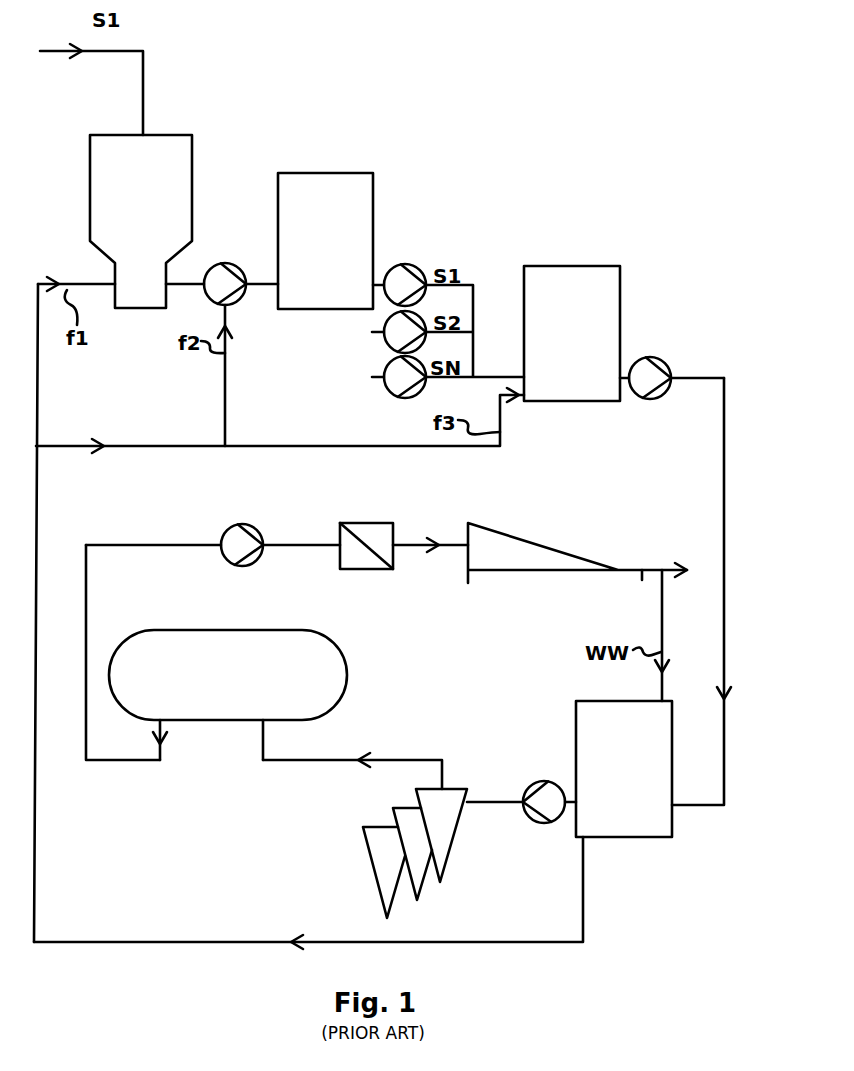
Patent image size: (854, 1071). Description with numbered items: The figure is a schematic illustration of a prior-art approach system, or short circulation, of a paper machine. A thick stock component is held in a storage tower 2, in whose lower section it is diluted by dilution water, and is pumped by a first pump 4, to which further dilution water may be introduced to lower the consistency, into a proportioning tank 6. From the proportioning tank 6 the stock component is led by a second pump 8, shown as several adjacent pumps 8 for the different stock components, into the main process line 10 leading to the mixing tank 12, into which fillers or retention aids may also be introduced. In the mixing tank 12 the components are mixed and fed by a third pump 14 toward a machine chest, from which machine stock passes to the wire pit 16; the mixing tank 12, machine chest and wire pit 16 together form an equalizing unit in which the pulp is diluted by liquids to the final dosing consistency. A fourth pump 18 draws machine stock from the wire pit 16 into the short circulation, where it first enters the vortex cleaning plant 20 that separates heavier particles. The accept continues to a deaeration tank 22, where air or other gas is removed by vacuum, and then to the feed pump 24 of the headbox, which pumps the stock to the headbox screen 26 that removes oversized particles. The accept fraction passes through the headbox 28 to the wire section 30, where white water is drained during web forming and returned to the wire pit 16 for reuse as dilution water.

The storage tower 2 is at (125, 217).
The first pump 4 is at (230, 268).
The proportioning tank 6 is at (312, 233).
The second pump 8 is at (406, 270).
The main process line 10 is at (473, 308).
The mixing tank 12 is at (560, 297).
The third pump 14 is at (661, 355).
The wire pit 16 is at (622, 775).
The fourth pump 18 is at (531, 794).
The vortex cleaning plant 20 is at (450, 792).
The deaeration tank 22 is at (320, 660).
The feed pump 24 is at (243, 563).
The headbox screen 26 is at (340, 554).
The headbox 28 is at (569, 569).
The wire section 30 is at (646, 635).